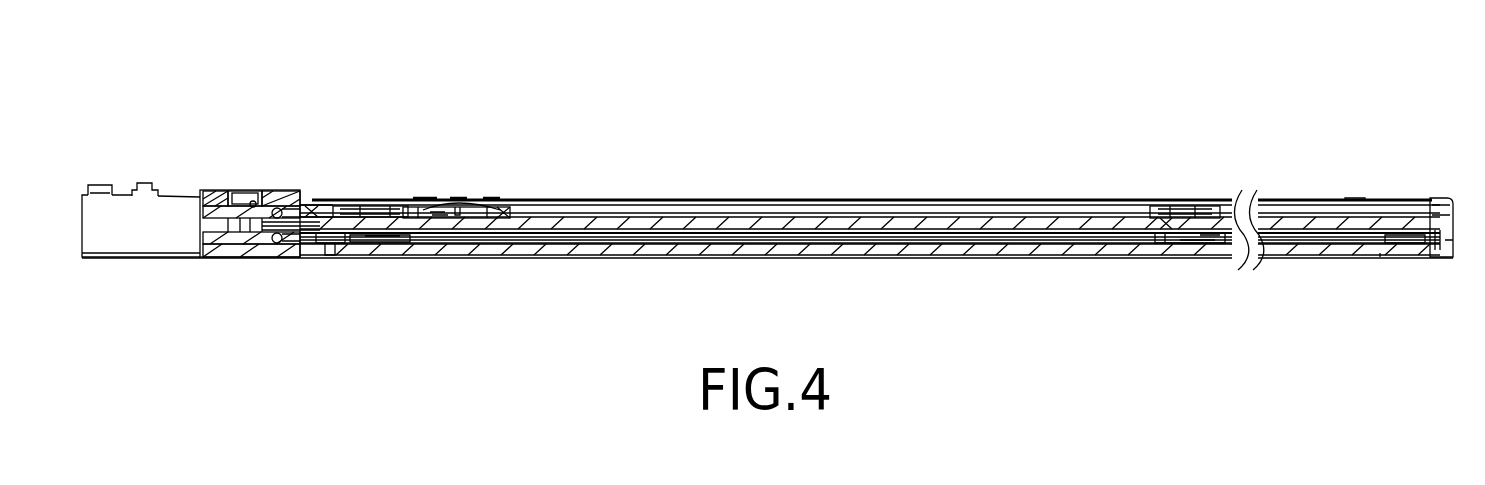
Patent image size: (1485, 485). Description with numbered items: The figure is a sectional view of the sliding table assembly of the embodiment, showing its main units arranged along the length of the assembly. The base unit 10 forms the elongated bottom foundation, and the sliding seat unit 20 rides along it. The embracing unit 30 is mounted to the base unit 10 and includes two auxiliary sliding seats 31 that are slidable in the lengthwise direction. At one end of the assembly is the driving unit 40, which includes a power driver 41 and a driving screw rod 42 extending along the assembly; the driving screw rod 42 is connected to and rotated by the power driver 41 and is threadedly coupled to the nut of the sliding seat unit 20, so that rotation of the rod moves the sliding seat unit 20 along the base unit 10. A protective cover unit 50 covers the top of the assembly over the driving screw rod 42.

The base unit 10 is at (1170, 258).
The sliding seat unit 20 is at (475, 203).
The embracing unit 30 is at (338, 203).
The auxiliary sliding seat 31 is at (1193, 203).
The driving unit 40 is at (172, 197).
The power driver 41 is at (123, 189).
The driving screw rod 42 is at (852, 227).
The protective cover unit 50 is at (1377, 198).